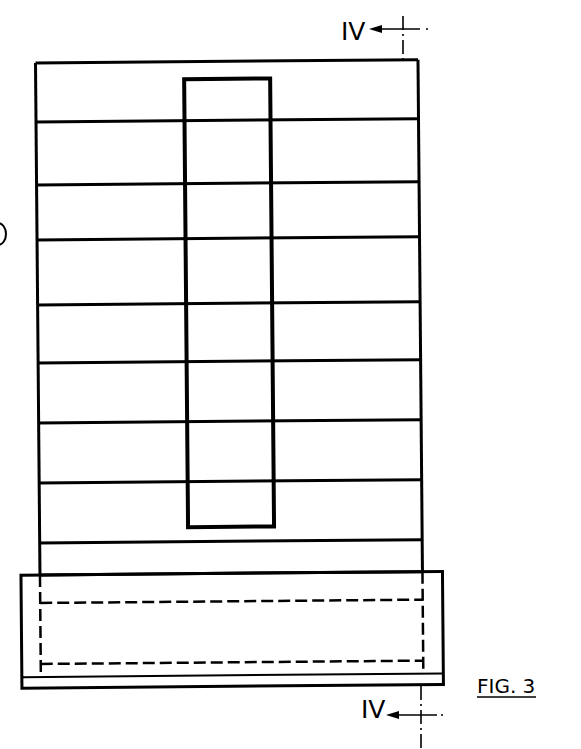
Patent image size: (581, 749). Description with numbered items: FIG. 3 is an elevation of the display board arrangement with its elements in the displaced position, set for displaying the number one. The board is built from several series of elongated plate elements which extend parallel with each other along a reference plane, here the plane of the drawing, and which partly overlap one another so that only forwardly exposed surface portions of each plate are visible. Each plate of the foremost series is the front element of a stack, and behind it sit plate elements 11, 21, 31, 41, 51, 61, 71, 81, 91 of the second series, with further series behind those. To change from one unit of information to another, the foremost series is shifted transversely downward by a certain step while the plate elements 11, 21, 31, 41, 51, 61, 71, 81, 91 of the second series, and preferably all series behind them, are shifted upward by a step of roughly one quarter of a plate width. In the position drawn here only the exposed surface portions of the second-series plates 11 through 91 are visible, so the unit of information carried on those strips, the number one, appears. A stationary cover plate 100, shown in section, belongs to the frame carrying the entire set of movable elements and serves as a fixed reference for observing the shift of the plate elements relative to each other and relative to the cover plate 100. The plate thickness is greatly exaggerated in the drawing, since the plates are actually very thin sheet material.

The plate element 11 is at (412, 560).
The plate element 21 is at (412, 514).
The plate element 31 is at (411, 453).
The plate element 41 is at (411, 392).
The plate element 51 is at (410, 331).
The plate element 61 is at (407, 272).
The plate element 71 is at (407, 213).
The plate element 81 is at (407, 150).
The plate element 91 is at (402, 97).
The stationary cover plate 100 is at (435, 630).